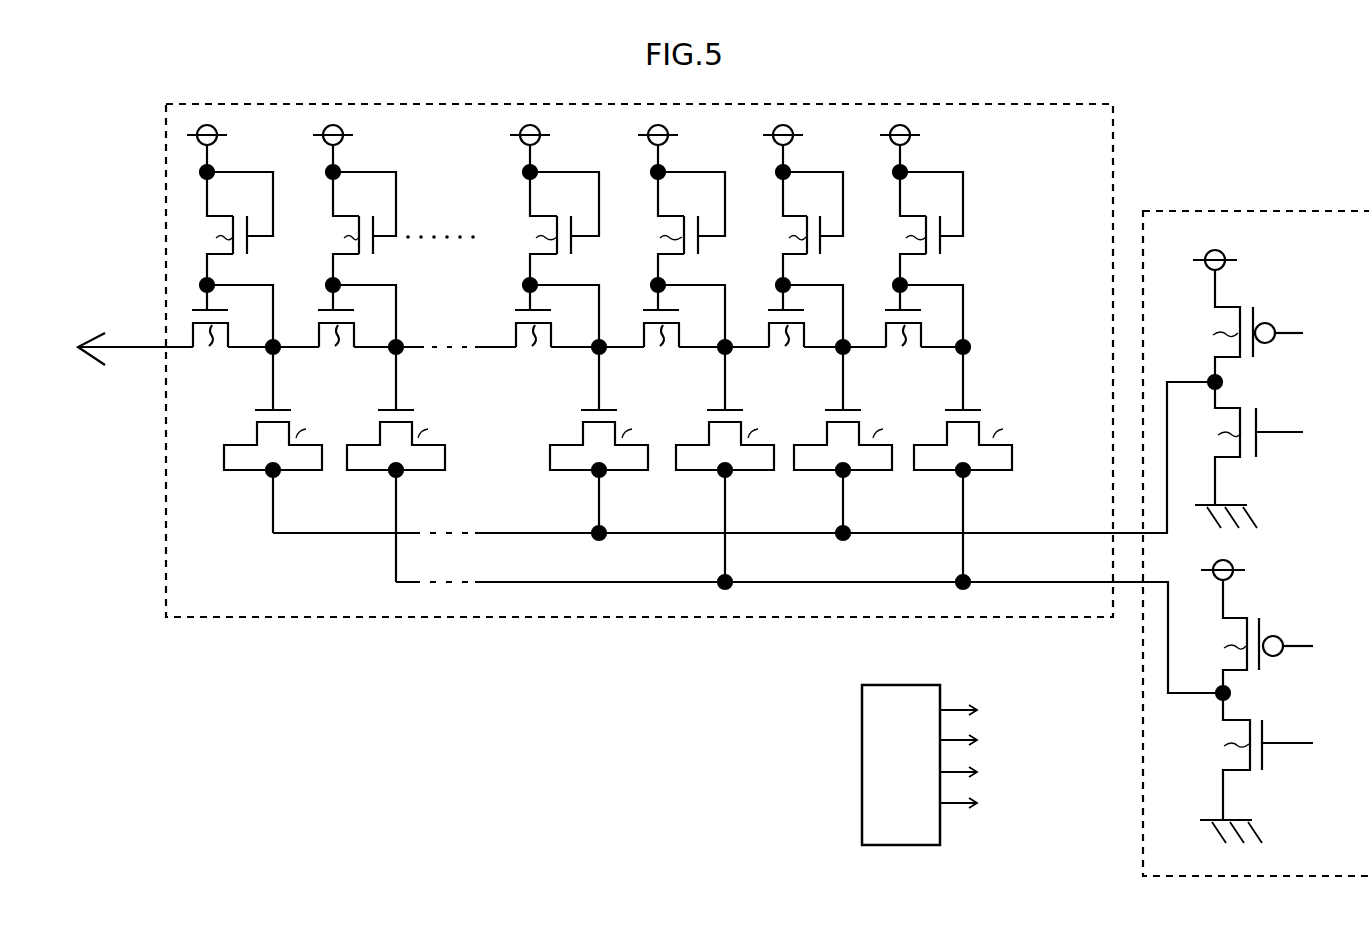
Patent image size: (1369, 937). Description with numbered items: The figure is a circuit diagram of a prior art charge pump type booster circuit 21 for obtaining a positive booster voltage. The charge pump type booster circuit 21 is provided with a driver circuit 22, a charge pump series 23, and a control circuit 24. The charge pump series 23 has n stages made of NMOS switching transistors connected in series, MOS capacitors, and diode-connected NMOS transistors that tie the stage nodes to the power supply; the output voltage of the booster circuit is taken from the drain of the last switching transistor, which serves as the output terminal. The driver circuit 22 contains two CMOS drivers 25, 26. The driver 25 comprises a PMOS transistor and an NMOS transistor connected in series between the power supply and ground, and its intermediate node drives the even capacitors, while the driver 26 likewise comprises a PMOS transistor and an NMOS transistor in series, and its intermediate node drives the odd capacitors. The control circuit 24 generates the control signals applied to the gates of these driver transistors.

The charge pump type booster circuit 21 is at (893, 98).
The driver circuit 22 is at (1321, 214).
The charge pump series 23 is at (1045, 106).
The control circuit 24 is at (898, 685).
The CMOS driver 25 is at (1303, 283).
The CMOS driver 26 is at (1308, 578).